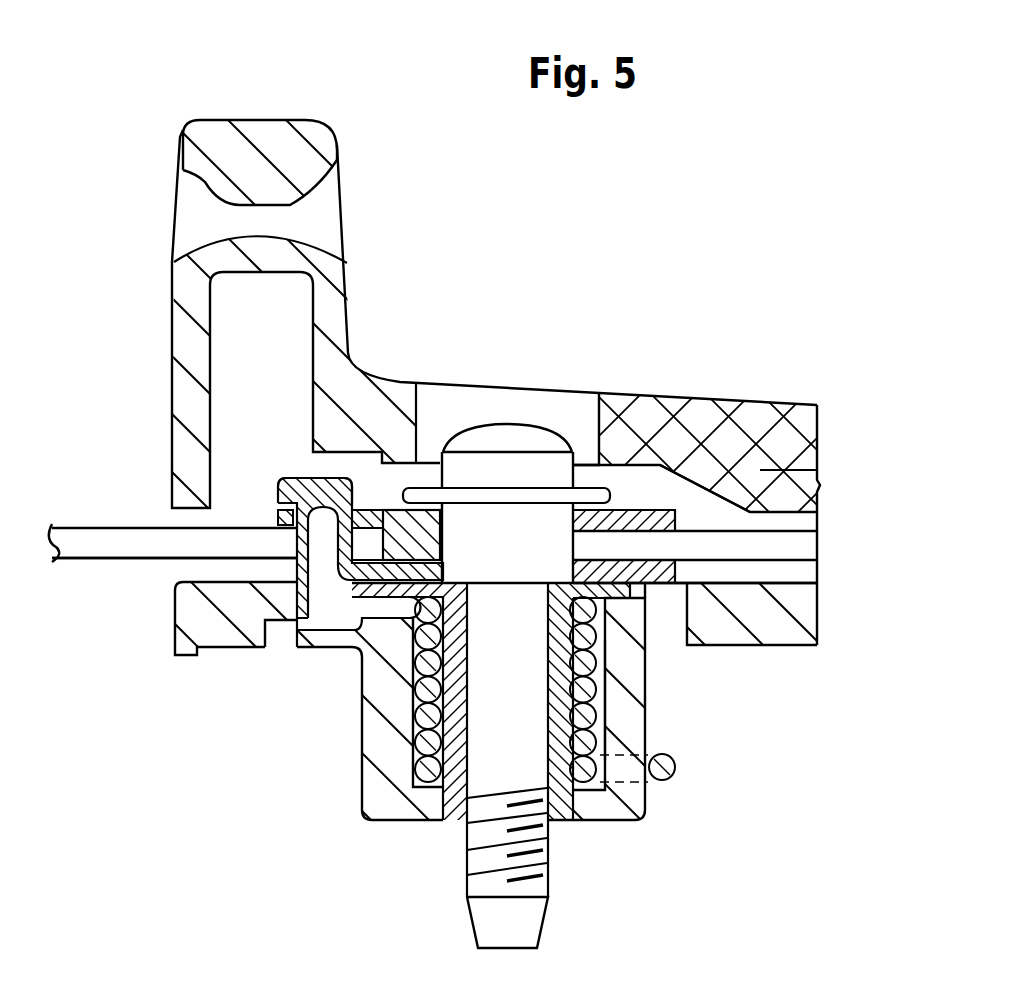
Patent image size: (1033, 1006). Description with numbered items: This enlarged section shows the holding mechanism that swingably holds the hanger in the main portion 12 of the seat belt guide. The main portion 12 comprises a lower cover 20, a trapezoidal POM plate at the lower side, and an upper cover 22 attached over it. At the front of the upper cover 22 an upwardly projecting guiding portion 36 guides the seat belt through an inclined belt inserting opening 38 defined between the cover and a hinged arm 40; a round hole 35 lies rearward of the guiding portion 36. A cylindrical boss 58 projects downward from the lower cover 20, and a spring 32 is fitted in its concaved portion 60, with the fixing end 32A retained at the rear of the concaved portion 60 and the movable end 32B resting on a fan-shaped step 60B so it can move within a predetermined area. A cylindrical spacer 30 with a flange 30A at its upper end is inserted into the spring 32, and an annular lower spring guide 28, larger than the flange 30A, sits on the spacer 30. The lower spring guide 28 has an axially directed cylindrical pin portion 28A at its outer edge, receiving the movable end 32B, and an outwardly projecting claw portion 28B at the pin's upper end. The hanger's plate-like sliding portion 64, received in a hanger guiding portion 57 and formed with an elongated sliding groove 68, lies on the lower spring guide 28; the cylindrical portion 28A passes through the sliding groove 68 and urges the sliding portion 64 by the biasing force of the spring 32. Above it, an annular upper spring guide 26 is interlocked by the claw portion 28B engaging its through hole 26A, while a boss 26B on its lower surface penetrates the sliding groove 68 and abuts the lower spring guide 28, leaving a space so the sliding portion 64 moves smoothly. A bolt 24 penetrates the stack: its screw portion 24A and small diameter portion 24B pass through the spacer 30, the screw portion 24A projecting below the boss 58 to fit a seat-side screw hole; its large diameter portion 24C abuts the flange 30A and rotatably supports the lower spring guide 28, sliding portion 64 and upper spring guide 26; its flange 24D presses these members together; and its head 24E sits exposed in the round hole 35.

The main portion 12 is at (868, 505).
The lower cover 20 is at (805, 614).
The upper cover 22 is at (818, 517).
The bolt 24 is at (535, 425).
The screw portion 24A is at (548, 887).
The small diameter portion 24B is at (447, 818).
The large diameter portion 24C is at (668, 505).
The flange 24D is at (603, 500).
The head 24E is at (588, 486).
The upper spring guide 26 is at (723, 512).
The through hole 26A is at (366, 508).
The boss 26B is at (408, 545).
The lower spring guide 28 is at (664, 596).
The cylindrical pin portion 28A is at (292, 535).
The claw portion 28B is at (283, 486).
The spacer 30 is at (567, 792).
The flange 30A is at (603, 707).
The spring 32 is at (600, 710).
The fixing end 32A is at (670, 779).
The movable end 32B is at (318, 620).
The round hole 35 is at (427, 440).
The guiding portion 36 is at (297, 110).
The belt inserting opening 38 is at (240, 207).
The arm 40 is at (198, 163).
The hanger guiding portion 57 is at (812, 478).
The boss 58 is at (382, 733).
The concaved portion 60 is at (410, 760).
The step 60B is at (262, 620).
The sliding portion 64 is at (122, 528).
The sliding groove 68 is at (135, 560).